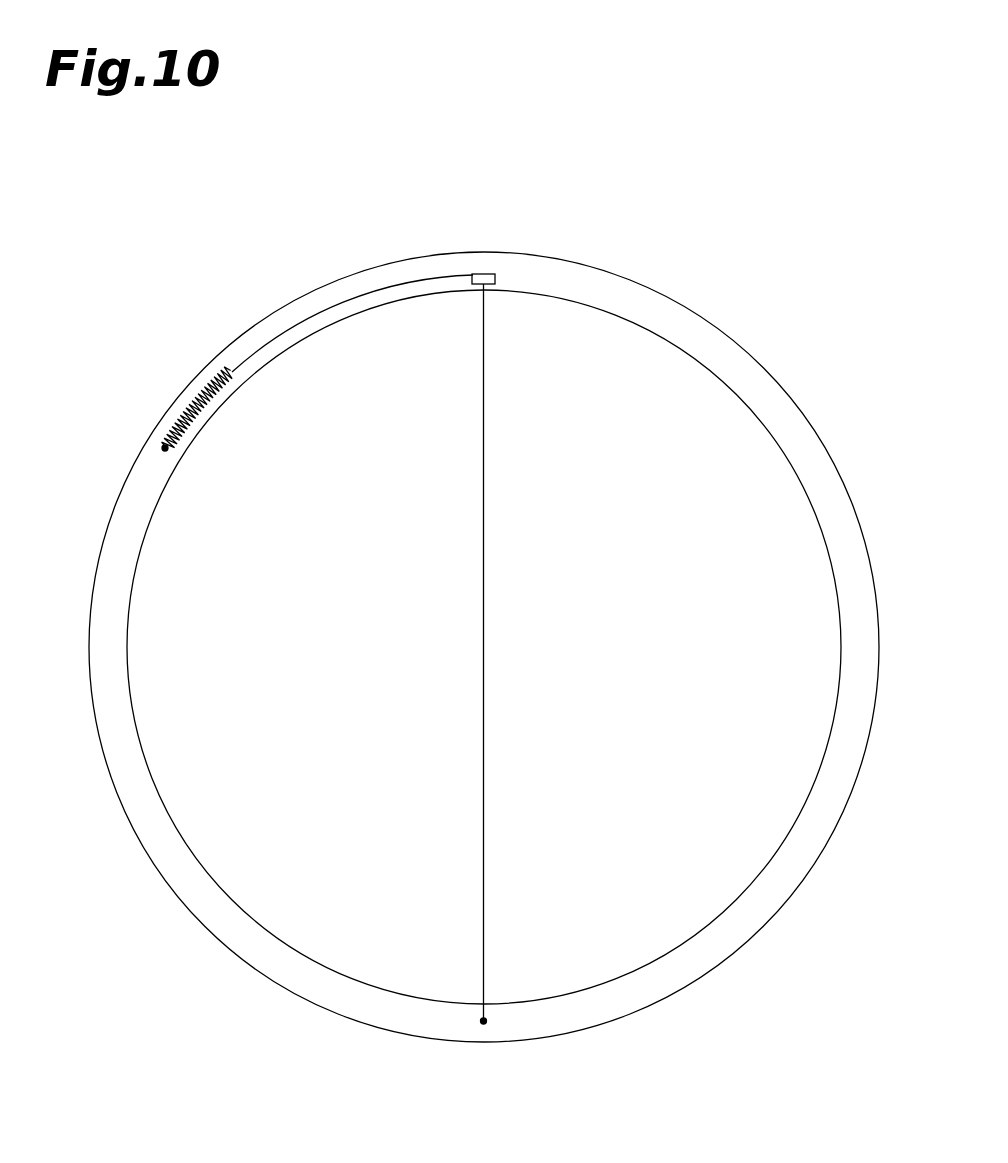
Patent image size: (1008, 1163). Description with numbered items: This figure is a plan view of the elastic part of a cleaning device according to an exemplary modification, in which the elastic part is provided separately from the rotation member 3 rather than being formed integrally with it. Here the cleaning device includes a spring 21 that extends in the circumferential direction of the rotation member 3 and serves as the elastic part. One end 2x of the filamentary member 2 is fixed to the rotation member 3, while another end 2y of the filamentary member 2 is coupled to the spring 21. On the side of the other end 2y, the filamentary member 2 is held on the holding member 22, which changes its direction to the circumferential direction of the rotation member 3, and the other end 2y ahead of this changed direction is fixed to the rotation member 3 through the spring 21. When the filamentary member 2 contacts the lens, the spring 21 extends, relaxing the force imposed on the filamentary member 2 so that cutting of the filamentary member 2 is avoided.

The filamentary member 2 is at (487, 650).
The one end 2x is at (481, 1022).
The another end 2y is at (238, 363).
The rotation member 3 is at (610, 292).
The spring 21 is at (197, 398).
The holding member 22 is at (490, 276).